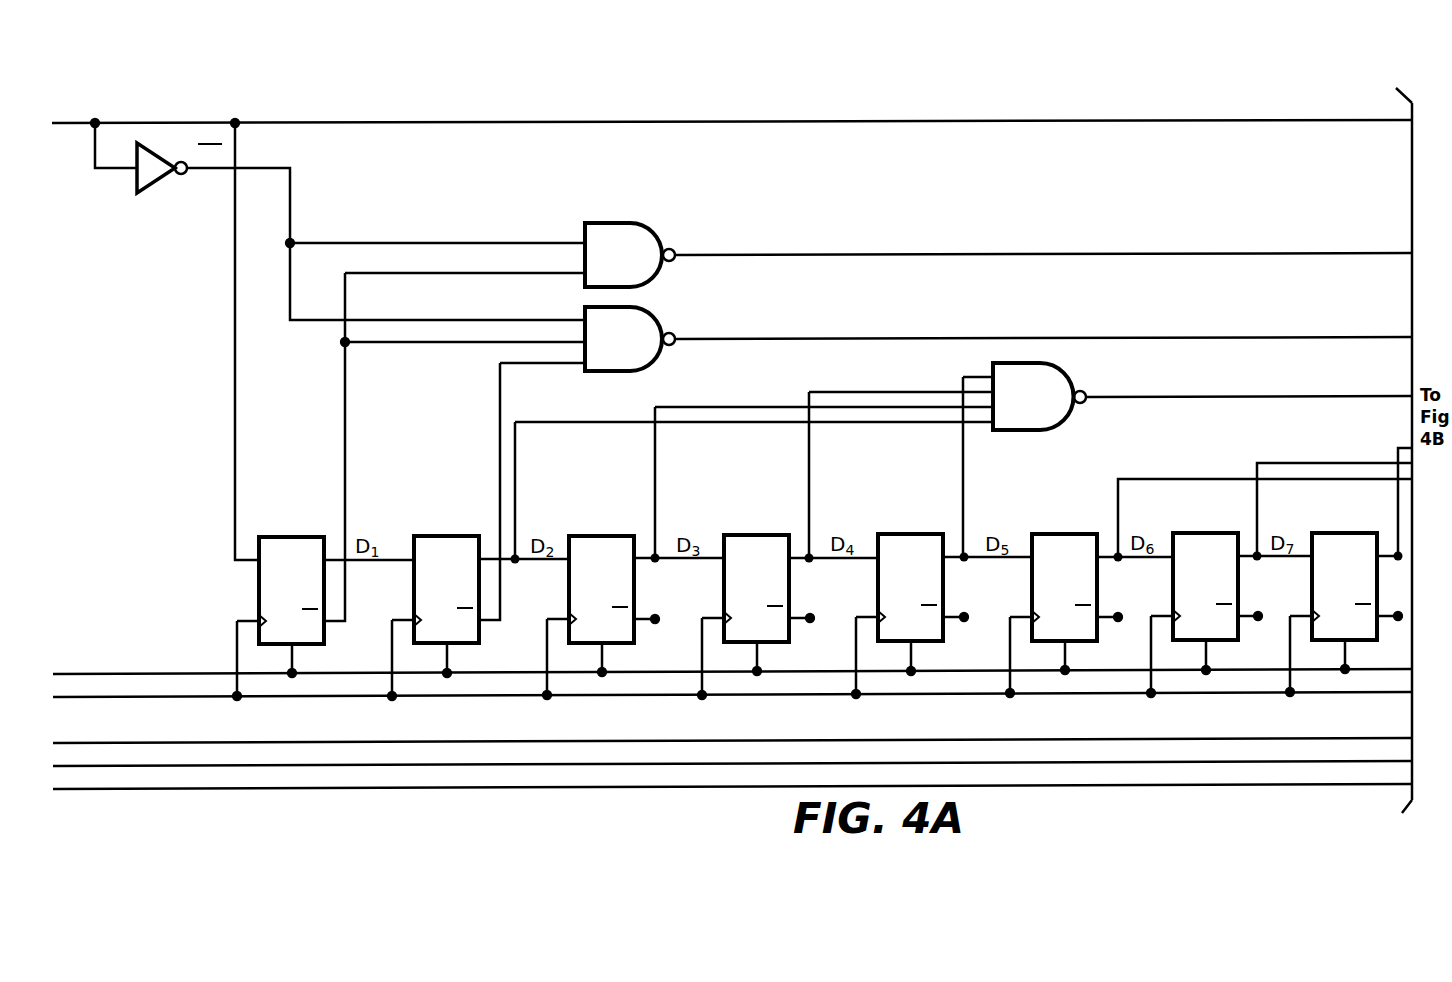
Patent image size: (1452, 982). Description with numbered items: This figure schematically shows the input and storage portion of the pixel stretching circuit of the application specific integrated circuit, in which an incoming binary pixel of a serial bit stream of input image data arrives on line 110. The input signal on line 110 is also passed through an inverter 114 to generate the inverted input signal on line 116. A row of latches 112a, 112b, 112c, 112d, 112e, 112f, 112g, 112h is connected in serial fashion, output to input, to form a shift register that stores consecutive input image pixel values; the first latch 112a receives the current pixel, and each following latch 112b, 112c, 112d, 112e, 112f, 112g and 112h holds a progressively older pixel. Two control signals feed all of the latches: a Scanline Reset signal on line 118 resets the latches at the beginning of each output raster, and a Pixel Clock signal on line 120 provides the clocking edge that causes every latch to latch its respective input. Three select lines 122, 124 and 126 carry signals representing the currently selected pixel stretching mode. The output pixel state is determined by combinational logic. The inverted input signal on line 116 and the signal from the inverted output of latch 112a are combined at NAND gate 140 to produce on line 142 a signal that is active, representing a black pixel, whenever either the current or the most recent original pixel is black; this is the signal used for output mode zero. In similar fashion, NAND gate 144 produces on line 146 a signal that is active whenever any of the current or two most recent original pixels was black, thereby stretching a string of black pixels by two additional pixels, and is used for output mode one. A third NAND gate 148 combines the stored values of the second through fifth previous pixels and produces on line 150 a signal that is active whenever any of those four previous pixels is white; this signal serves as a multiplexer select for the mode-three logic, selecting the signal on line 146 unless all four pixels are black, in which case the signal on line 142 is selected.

The line 110 is at (145, 122).
The inverter 114 is at (148, 190).
The line 116 is at (274, 168).
The latch 112a is at (291, 537).
The latch 112b is at (446, 536).
The latch 112c is at (601, 536).
The latch 112d is at (756, 535).
The latch 112e is at (910, 534).
The latch 112f is at (1064, 534).
The latch 112g is at (1205, 533).
The latch 112h is at (1344, 533).
The line 118 is at (226, 672).
The line 120 is at (207, 698).
The select line 122 is at (483, 742).
The select line 124 is at (388, 765).
The select line 126 is at (285, 790).
The NAND gate 140 is at (620, 223).
The line 142 is at (773, 254).
The NAND gate 144 is at (655, 308).
The line 146 is at (757, 339).
The NAND gate 148 is at (1072, 378).
The line 150 is at (1195, 396).